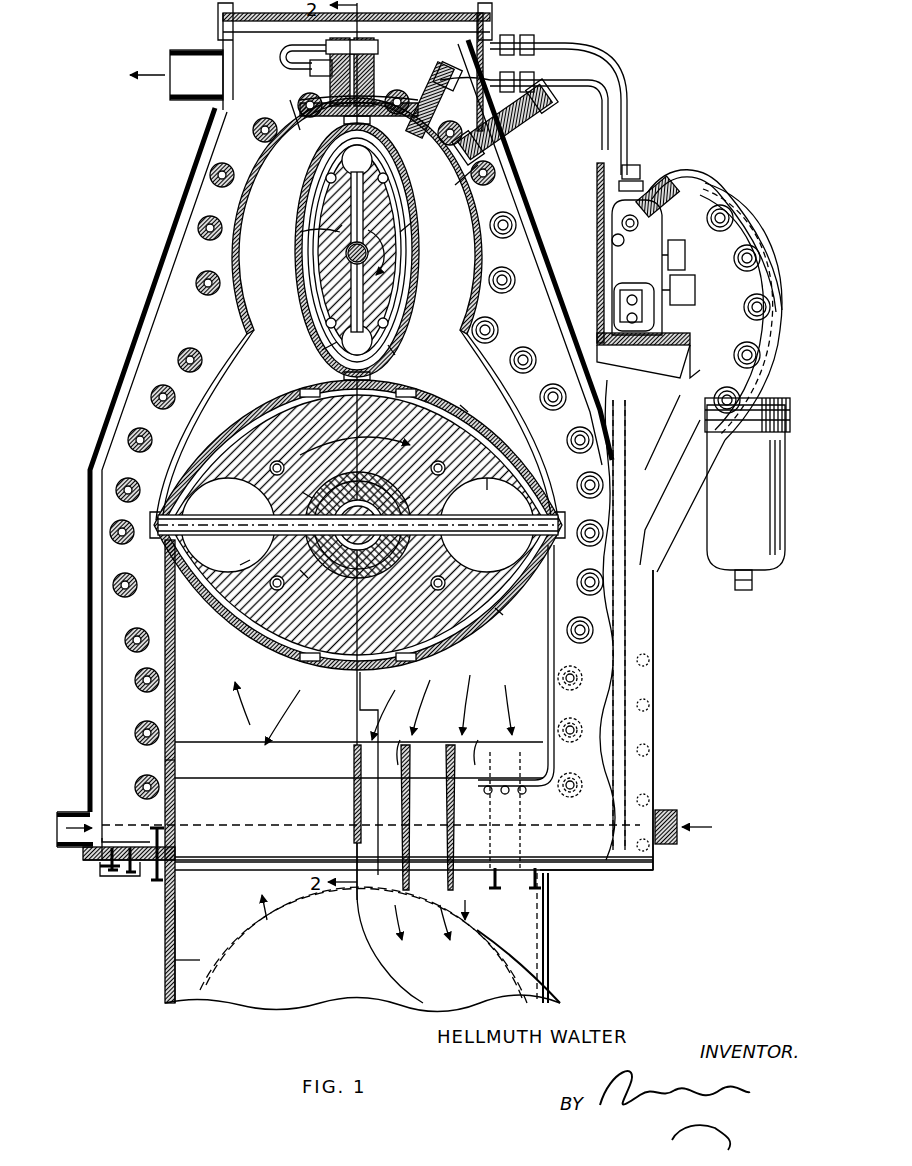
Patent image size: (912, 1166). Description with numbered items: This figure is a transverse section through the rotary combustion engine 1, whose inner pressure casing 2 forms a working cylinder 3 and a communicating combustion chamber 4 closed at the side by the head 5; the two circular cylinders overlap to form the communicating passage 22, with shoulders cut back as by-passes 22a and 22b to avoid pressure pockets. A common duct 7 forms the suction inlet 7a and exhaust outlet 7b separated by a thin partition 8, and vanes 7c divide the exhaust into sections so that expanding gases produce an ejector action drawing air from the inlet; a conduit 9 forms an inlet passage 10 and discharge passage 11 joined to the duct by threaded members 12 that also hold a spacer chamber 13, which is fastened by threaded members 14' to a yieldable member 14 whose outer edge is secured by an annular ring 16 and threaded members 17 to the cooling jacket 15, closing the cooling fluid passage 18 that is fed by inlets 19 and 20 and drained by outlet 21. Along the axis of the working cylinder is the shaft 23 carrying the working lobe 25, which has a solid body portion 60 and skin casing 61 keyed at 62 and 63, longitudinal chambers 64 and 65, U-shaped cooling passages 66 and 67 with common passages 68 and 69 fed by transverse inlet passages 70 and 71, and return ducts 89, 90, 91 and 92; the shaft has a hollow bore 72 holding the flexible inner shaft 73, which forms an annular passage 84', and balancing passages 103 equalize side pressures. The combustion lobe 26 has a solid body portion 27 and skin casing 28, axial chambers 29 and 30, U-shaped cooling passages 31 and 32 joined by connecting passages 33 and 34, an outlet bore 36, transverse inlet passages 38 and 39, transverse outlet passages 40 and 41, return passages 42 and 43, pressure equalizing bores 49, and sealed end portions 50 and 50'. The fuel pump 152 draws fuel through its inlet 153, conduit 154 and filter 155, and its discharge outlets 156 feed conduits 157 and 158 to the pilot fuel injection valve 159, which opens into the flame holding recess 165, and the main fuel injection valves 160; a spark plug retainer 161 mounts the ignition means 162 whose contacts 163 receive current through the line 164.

The rotary combustion engine 1 is at (658, 684).
The inner pressure casing 2 is at (164, 690).
The working chamber or cylinder 3 is at (462, 372).
The combustion chamber 4 is at (472, 228).
The closure plate or head 5 is at (610, 752).
The common duct 7 is at (162, 764).
The suction inlet 7a is at (205, 795).
The exhaust outlet 7b is at (398, 765).
The vanes 7c is at (410, 805).
The thin partition 8 is at (353, 760).
The conduit 9 is at (163, 925).
The inlet passage 10 is at (200, 955).
The discharge passage 11 is at (465, 920).
The threaded members 12 is at (165, 872).
The spacer chamber 13 is at (222, 840).
The yieldable member 14 is at (122, 842).
The threaded members 14' is at (133, 874).
The cooling jacket 15 is at (88, 580).
The annular ring 16 is at (102, 866).
The threaded members 17 is at (112, 876).
The cooling fluid passage 18 is at (100, 735).
The cooling fluid inlet 19 is at (667, 812).
The cooling fluid inlet 20 is at (72, 847).
The cooling fluid outlet 21 is at (196, 90).
The communicating passage 22 is at (246, 310).
The by-pass 22a is at (466, 336).
The by-pass 22b is at (252, 340).
The shaft 23 is at (385, 485).
The working lobe 25 is at (493, 417).
The combustion lobe 26 is at (412, 322).
The solid body portion 27 is at (410, 303).
The skin casing 28 is at (412, 288).
The axially disposed chamber 29 is at (398, 172).
The axially disposed chamber 30 is at (337, 342).
The U-shaped cooling passage 31 is at (318, 170).
The U-shaped cooling passage 32 is at (388, 345).
The connecting passage 33 is at (358, 160).
The connecting passage 34 is at (358, 340).
The outlet bore 36 is at (356, 250).
The transverse inlet passage 38 is at (350, 201).
The transverse inlet passage 39 is at (362, 296).
The transverse outlet passage 40 is at (410, 233).
The transverse outlet passage 41 is at (300, 230).
The return passage 42 is at (412, 258).
The return passage 43 is at (296, 256).
The pressure equalizing bores 49 is at (326, 180).
The end portion 50 is at (328, 139).
The end portion 50' is at (384, 374).
The solid body portion 60 is at (425, 402).
The skin casing 61 is at (460, 405).
The key 62 is at (300, 570).
The key 63 is at (302, 492).
The longitudinal chamber 64 is at (487, 490).
The longitudinal chamber 65 is at (240, 565).
The U-shaped cooling passage 66 is at (495, 608).
The U-shaped cooling passage 67 is at (251, 693).
The common passage 68 is at (566, 525).
The common passage 69 is at (150, 525).
The transverse inlet passage 70 is at (475, 535).
The transverse inlet passage 71 is at (226, 535).
The hollow bore 72 is at (378, 515).
The inner shaft 73 is at (350, 548).
The annular passage 84' is at (358, 525).
The common return duct 89 is at (306, 398).
The common return duct 90 is at (404, 398).
The common return duct 91 is at (409, 653).
The common return duct 92 is at (307, 653).
The balancing passages 103 is at (272, 464).
The fuel pump 152 is at (622, 262).
The fuel pump inlet 153 is at (642, 185).
The conduit 154 is at (697, 176).
The filter 155 is at (712, 534).
The discharge outlets 156 is at (622, 172).
The conduit 157 is at (505, 80).
The conduit 158 is at (522, 42).
The pilot fuel injection valve 159 is at (372, 66).
The main fuel injection valves 160 is at (328, 65).
The spark plug retainer 161 is at (524, 170).
The spark plug or ignition means 162 is at (515, 158).
The contacts 163 is at (456, 184).
The line 164 is at (550, 82).
The flame holding recess 165 is at (412, 128).